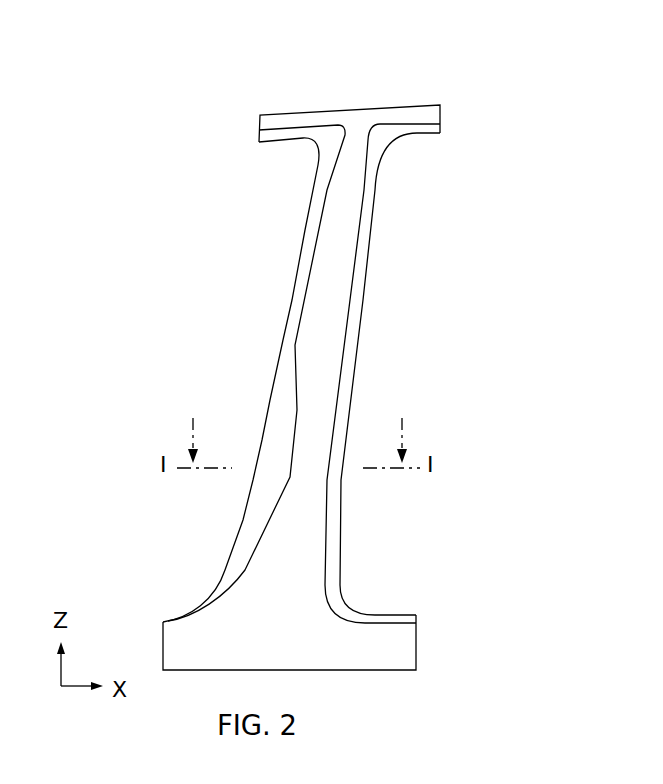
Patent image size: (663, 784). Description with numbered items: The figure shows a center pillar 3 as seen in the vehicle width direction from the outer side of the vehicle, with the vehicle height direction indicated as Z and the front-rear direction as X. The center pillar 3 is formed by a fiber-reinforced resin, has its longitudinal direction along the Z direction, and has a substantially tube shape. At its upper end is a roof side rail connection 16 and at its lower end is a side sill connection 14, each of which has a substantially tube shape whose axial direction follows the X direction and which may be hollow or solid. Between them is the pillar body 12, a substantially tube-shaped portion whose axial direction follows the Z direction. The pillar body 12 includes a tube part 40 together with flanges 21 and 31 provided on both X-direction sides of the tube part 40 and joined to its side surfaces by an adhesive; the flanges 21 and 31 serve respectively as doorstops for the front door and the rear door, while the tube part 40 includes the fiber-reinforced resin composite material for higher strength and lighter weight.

The center pillar 3 is at (327, 342).
The roof side rail connection 16 is at (440, 107).
The side sill connection 14 is at (416, 625).
The pillar body 12 is at (383, 265).
The flange 31 is at (347, 370).
The flange 21 is at (277, 376).
The tube part 40 is at (318, 336).